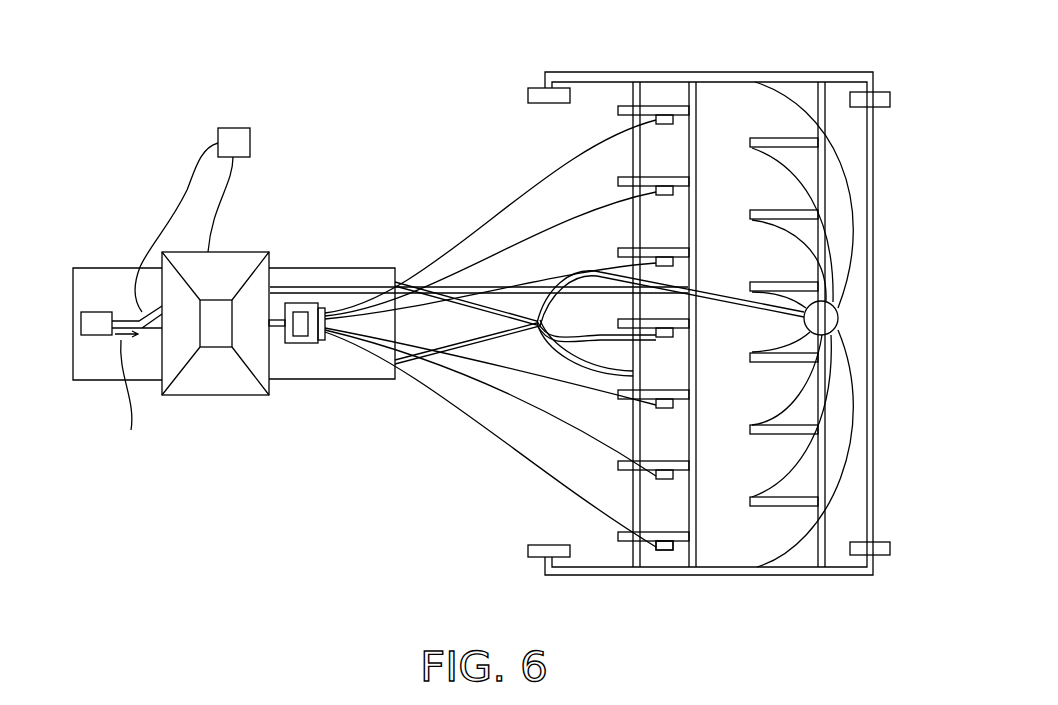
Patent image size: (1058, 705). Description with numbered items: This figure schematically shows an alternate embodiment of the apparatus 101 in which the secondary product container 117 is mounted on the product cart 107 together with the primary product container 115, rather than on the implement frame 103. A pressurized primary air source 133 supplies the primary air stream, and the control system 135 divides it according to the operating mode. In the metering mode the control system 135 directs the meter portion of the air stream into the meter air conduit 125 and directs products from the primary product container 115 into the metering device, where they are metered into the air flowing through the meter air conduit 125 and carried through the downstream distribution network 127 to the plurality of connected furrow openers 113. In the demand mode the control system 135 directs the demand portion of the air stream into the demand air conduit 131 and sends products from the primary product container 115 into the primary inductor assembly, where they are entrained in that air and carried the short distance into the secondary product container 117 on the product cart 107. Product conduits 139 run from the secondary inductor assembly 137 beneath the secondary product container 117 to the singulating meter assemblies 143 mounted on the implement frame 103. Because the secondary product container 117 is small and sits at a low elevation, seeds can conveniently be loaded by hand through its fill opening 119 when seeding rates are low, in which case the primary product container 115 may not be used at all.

The apparatus 101 is at (397, 66).
The implement frame 103 is at (868, 73).
The product cart 107 is at (73, 381).
The furrow openers 113 is at (655, 118).
The primary product container 115 is at (213, 396).
The secondary product container 117 is at (303, 344).
The fill opening 119 is at (298, 312).
The meter air conduit 125 is at (322, 280).
The downstream distribution network 127 is at (830, 322).
The demand air conduit 131 is at (277, 327).
The pressurized primary air source 133 is at (96, 312).
The control system 135 is at (235, 128).
The secondary inductor assembly 137 is at (332, 303).
The product conduits 139 is at (487, 426).
The singulating meter assemblies 143 is at (667, 552).